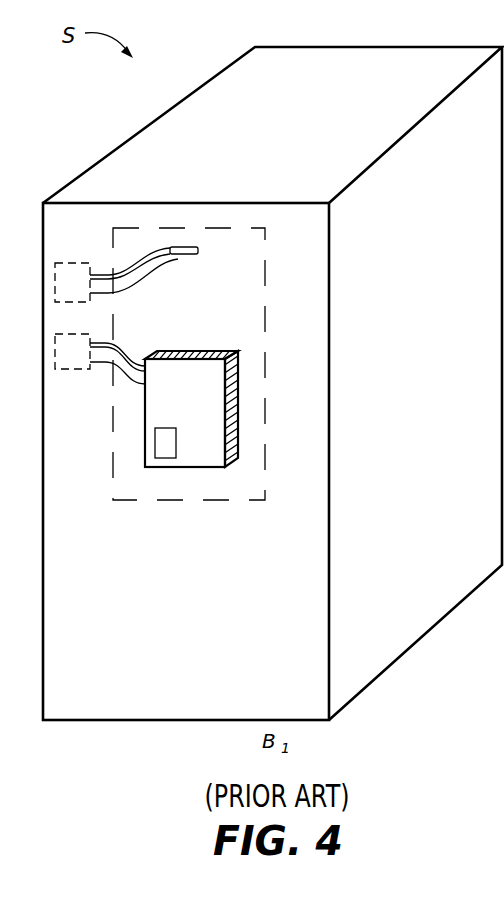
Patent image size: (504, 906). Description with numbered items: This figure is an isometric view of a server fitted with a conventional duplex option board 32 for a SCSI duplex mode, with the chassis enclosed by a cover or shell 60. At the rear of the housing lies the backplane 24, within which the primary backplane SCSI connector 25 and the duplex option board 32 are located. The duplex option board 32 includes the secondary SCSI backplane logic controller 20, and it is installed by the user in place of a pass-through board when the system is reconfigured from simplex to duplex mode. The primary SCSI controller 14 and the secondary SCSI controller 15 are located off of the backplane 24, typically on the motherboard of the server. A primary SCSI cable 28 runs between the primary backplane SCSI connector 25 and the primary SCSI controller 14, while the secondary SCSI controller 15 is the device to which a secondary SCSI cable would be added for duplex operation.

The cover or shell 60 is at (432, 44).
The backplane 24 is at (266, 325).
The primary SCSI controller 14 is at (74, 262).
The secondary SCSI controller 15 is at (74, 370).
The primary SCSI cable 28 is at (152, 277).
The primary backplane SCSI connector 25 is at (198, 250).
The duplex option board 32 is at (213, 351).
The secondary SCSI backplane logic controller 20 is at (162, 467).